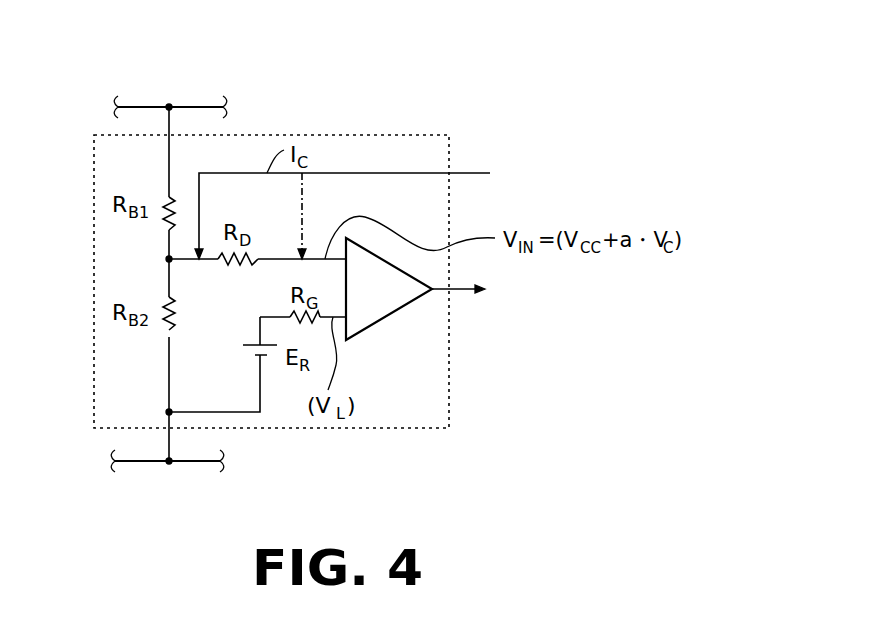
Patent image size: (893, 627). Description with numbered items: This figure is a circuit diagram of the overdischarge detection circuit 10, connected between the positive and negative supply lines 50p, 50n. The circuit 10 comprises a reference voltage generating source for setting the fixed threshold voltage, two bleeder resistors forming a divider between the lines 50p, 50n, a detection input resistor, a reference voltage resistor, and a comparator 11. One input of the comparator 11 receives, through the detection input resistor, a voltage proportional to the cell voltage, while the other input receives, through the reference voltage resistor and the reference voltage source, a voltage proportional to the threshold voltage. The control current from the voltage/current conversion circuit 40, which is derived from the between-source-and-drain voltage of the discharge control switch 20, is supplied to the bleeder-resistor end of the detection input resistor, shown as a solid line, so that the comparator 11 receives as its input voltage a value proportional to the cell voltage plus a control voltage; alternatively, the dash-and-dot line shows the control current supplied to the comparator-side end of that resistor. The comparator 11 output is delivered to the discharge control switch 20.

The overdischarge detection circuit 10 is at (334, 428).
The comparator 11 is at (388, 317).
The positive power supply line 50p is at (197, 107).
The negative power supply line 50n is at (200, 461).
The voltage/current conversion circuit 40 is at (386, 211).
The discharge control switch 20 is at (489, 290).